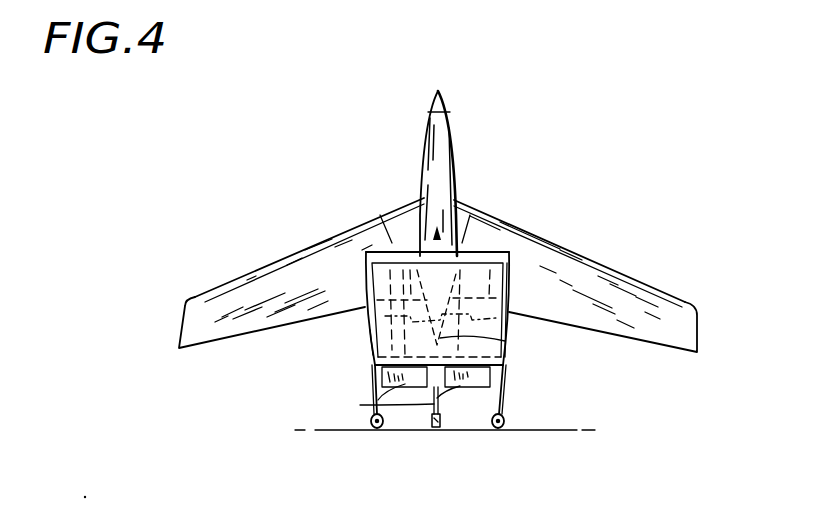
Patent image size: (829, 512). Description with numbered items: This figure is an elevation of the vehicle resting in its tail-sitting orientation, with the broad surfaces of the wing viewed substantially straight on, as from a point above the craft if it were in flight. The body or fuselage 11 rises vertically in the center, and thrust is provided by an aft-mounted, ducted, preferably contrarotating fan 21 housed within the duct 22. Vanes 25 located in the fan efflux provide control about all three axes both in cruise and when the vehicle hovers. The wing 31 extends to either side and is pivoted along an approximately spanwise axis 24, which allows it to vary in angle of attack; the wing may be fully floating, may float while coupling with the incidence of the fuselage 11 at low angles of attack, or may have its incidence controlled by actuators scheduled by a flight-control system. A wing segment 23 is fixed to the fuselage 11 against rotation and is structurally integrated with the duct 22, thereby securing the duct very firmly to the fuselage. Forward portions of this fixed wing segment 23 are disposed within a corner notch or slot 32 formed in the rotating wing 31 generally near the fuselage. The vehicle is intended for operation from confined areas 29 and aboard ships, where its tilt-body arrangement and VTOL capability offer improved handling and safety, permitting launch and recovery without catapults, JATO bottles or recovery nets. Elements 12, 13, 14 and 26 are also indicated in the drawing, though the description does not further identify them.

The body or fuselage 11 is at (440, 127).
The engine housing 12 is at (503, 256).
The inlet duct 13 is at (437, 288).
The lower duct 14 is at (505, 341).
The contrarotating fan 21 is at (376, 341).
The duct 22 is at (370, 353).
The wing segment 23 is at (538, 241).
The spanwise axis 24 is at (383, 246).
The vanes 25 is at (380, 400).
The wheels 26 is at (378, 430).
The confined areas 29 is at (563, 430).
The wing 31 is at (663, 313).
The corner notch or slot 32 is at (367, 253).